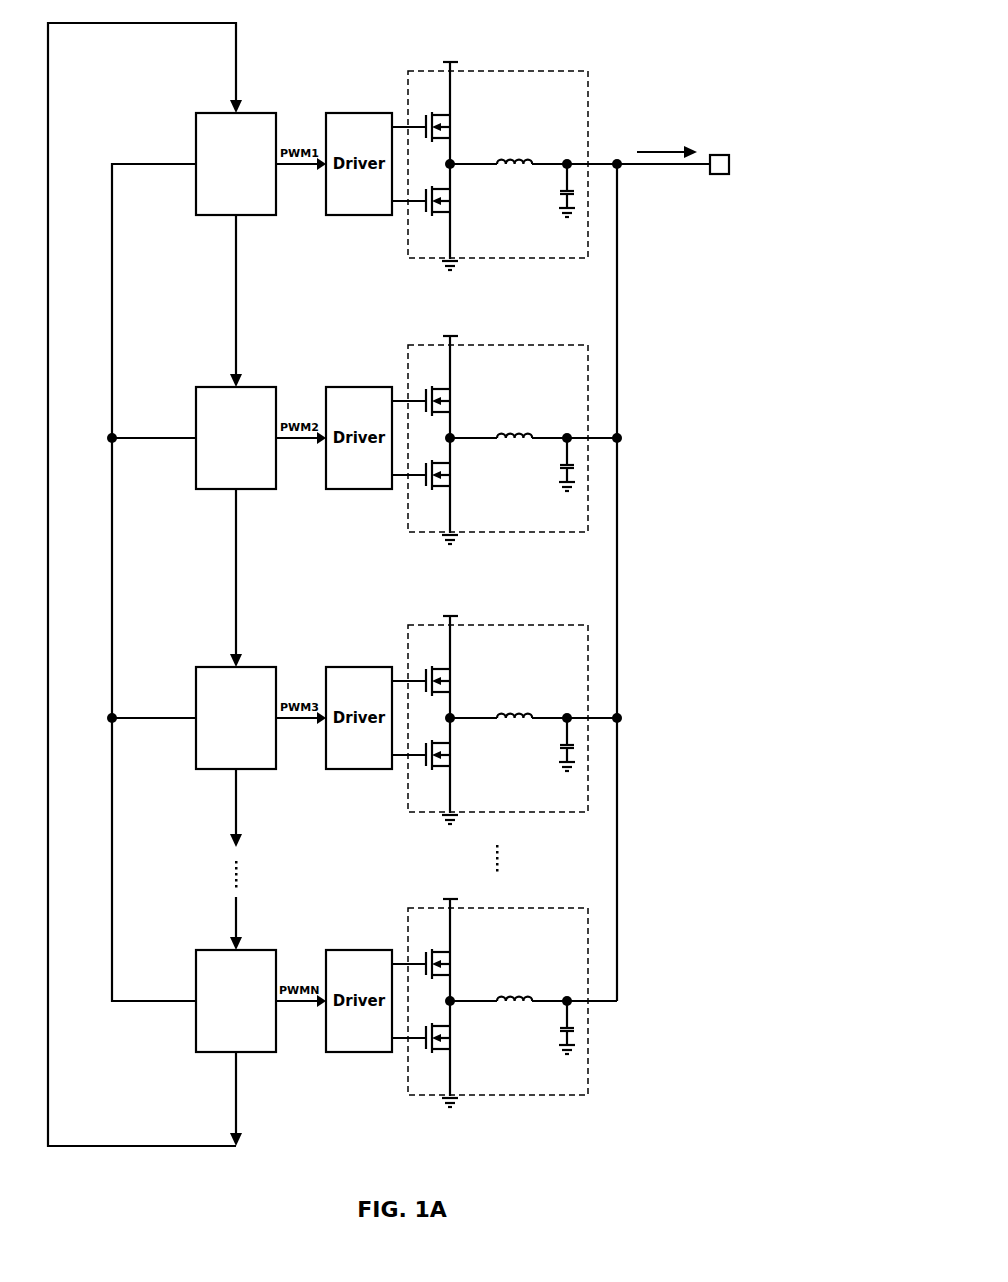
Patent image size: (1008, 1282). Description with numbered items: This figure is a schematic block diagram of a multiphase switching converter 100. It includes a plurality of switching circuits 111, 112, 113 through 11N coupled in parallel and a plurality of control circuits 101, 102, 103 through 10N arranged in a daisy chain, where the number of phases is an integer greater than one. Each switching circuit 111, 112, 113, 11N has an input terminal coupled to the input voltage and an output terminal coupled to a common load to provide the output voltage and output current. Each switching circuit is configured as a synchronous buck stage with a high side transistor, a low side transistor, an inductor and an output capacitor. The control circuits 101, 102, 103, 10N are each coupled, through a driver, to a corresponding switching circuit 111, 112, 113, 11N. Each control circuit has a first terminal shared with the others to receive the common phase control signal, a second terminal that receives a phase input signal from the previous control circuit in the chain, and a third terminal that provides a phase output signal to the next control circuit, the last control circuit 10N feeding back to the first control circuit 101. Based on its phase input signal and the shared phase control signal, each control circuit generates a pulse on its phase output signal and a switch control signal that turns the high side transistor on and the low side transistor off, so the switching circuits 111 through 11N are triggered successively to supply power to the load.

The multiphase switching converter 100 is at (695, 28).
The control circuit 101 is at (216, 215).
The control circuit 102 is at (216, 489).
The control circuit 103 is at (216, 769).
The control circuit 10N is at (216, 1052).
The switching circuit 111 is at (421, 259).
The switching circuit 112 is at (421, 533).
The switching circuit 113 is at (421, 813).
The switching circuit 11N is at (421, 1096).